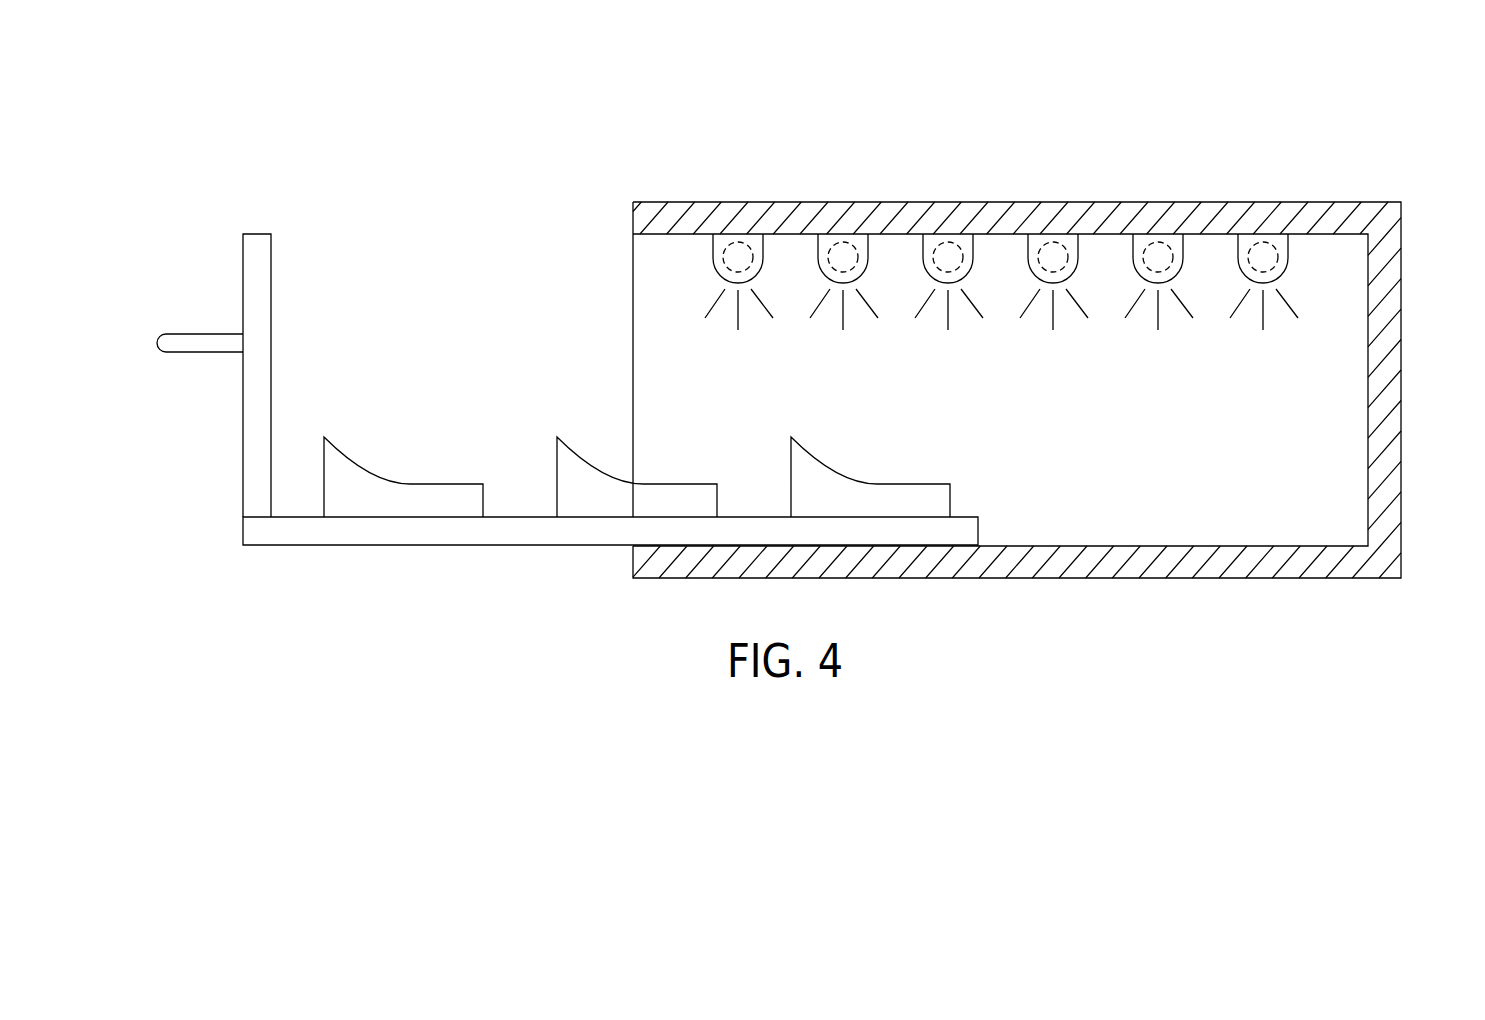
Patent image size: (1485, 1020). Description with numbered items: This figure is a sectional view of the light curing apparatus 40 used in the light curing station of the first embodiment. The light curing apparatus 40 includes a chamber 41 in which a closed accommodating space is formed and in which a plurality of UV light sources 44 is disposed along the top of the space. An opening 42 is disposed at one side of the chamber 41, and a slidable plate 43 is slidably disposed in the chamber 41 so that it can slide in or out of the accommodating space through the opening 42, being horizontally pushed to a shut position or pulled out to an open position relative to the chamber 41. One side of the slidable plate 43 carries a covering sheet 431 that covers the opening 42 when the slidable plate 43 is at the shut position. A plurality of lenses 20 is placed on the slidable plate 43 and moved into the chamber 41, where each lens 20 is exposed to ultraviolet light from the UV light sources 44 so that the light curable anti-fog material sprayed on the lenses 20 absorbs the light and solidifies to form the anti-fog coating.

The light curing apparatus 40 is at (1007, 318).
The chamber 41 is at (1385, 212).
The opening 42 is at (929, 225).
The UV light source 44 is at (738, 245).
The slidable plate 43 is at (553, 434).
The covering sheet 431 is at (242, 280).
The lens 20 is at (418, 484).